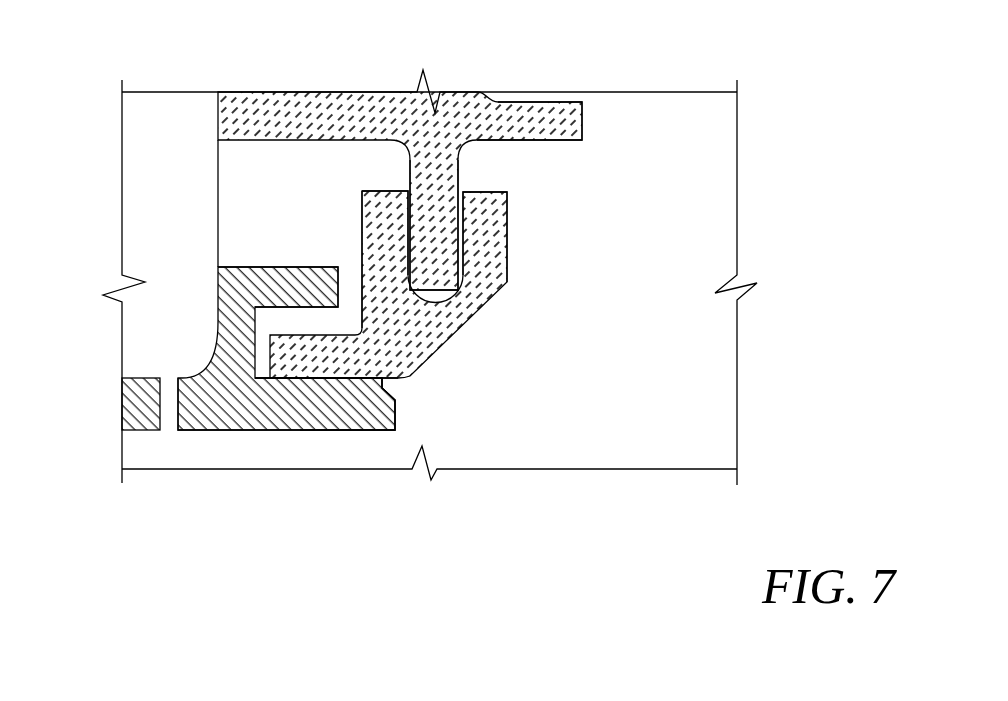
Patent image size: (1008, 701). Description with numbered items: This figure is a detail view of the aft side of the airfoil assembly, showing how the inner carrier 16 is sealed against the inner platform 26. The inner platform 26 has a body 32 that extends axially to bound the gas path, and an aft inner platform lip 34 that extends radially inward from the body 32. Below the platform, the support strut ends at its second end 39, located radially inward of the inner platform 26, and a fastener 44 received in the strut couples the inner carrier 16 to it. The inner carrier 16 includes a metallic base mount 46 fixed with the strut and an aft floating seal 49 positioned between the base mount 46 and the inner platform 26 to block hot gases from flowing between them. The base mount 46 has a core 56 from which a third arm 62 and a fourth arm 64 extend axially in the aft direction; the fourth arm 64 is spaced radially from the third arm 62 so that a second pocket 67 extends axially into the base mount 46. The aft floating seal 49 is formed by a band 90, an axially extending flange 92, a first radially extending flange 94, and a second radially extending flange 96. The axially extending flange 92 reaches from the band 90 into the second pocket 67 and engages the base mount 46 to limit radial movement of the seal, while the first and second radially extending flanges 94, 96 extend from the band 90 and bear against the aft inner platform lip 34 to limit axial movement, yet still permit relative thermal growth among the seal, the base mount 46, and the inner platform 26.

The inner carrier 16 is at (630, 374).
The inner platform 26 is at (602, 106).
The body 32 is at (529, 94).
The second inner platform lip 34 is at (472, 173).
The second end 39 is at (115, 333).
The fastener 44 is at (143, 440).
The base mount 46 is at (217, 440).
The second floating seal 49 is at (560, 298).
The core 56 is at (192, 440).
The third arm 62 is at (316, 258).
The fourth arm 64 is at (347, 442).
The second pocket 67 is at (290, 312).
The band 90 is at (455, 362).
The axially extending flange 92 is at (311, 388).
The first radially extending flange 94 is at (376, 184).
The second radially extending flange 96 is at (520, 245).